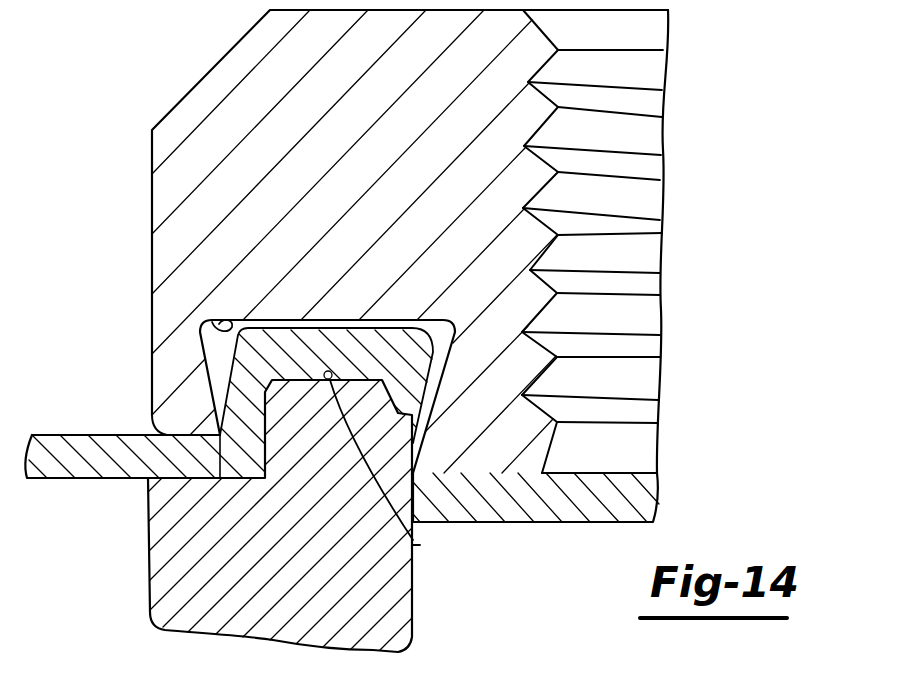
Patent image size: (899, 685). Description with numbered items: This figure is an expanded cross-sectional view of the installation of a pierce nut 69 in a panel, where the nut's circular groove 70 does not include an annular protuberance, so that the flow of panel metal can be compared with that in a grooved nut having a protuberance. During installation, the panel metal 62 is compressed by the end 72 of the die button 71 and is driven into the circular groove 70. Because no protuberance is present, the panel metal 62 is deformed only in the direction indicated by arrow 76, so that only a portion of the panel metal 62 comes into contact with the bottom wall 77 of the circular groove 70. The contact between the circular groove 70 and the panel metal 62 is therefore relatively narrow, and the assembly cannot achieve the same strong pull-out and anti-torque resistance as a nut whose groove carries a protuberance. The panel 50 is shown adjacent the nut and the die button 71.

The pierce nut 69 is at (140, 229).
The circular groove 70 is at (215, 345).
The bottom wall 77 is at (212, 322).
The panel metal 62 is at (275, 345).
The flange 50 is at (102, 470).
The die button 71 is at (380, 607).
The end 72 is at (390, 470).
The arrow 76 is at (340, 330).